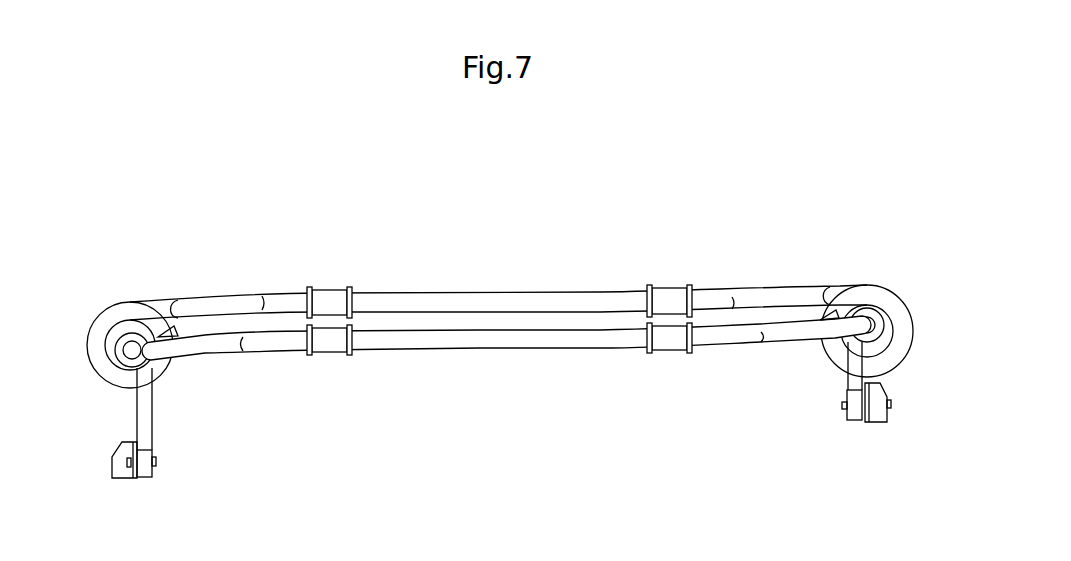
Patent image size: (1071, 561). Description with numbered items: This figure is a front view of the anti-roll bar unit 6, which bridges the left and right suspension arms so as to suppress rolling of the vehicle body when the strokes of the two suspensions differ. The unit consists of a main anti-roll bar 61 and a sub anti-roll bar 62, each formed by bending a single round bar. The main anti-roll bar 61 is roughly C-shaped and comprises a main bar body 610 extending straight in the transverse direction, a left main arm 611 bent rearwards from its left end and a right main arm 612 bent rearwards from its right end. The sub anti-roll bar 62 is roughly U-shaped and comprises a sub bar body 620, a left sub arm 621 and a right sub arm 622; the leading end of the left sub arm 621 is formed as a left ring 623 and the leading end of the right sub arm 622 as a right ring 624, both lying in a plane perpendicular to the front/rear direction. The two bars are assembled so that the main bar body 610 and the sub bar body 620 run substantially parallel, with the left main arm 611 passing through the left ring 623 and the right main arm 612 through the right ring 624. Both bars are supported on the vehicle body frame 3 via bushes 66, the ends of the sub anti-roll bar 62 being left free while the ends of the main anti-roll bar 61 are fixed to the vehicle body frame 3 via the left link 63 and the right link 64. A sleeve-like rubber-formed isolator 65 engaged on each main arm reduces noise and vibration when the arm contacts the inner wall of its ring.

The vehicle body frame 3 is at (123, 473).
The anti-roll bar unit 6 is at (458, 192).
The main anti-roll bar 61 is at (582, 360).
The sub anti-roll bar 62 is at (503, 267).
The left link 63 is at (852, 382).
The right link 64 is at (135, 413).
The rubber-formed isolator 65 is at (122, 333).
The bush 66 is at (338, 297).
The main bar body 610 is at (470, 340).
The left main arm 611 is at (788, 338).
The right main arm 612 is at (205, 347).
The sub bar body 620 is at (410, 300).
The left sub arm 621 is at (790, 293).
The right sub arm 622 is at (215, 300).
The left ring 623 is at (902, 315).
The right ring 624 is at (157, 373).